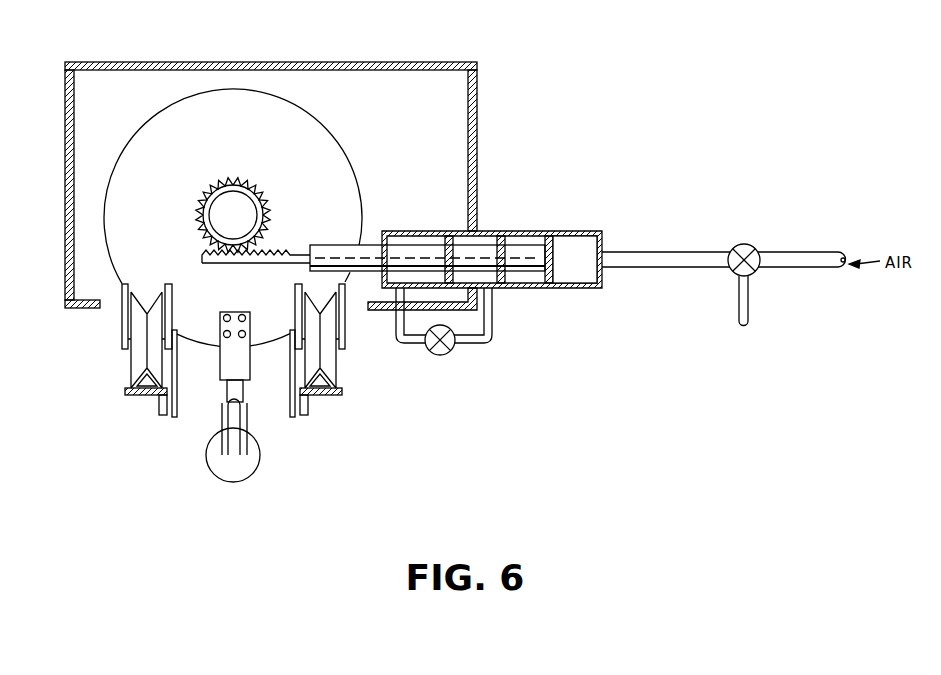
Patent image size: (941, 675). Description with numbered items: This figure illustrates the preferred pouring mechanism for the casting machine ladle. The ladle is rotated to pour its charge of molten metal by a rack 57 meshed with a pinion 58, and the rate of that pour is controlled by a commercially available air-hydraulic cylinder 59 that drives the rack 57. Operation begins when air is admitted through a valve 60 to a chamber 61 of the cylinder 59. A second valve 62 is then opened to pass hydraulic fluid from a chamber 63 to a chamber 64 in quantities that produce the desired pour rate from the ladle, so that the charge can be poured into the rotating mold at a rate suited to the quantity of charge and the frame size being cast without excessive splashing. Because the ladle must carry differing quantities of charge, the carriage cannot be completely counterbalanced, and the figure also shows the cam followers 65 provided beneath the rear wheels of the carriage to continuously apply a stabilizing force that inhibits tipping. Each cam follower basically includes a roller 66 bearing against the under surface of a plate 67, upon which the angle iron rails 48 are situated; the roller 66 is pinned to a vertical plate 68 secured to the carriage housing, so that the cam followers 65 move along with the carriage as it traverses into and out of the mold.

The angle iron rails 48 is at (340, 392).
The rack 57 is at (246, 264).
The pinion 58 is at (248, 190).
The air-hydraulic cylinder 59 is at (543, 217).
The valve 60 is at (745, 245).
The chamber 61 is at (580, 282).
The valve 62 is at (447, 354).
The chamber 63 is at (430, 237).
The chamber 64 is at (488, 237).
The cam followers 65 is at (191, 381).
The roller 66 is at (160, 414).
The plate 67 is at (128, 397).
The vertical plate 68 is at (178, 368).